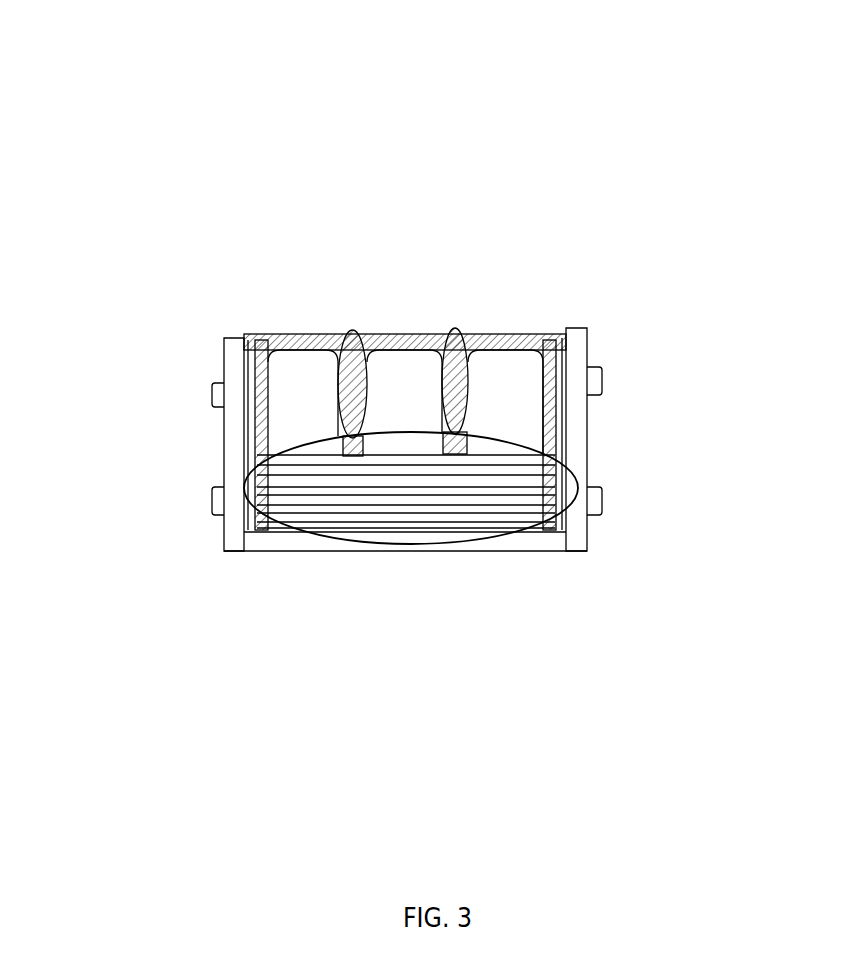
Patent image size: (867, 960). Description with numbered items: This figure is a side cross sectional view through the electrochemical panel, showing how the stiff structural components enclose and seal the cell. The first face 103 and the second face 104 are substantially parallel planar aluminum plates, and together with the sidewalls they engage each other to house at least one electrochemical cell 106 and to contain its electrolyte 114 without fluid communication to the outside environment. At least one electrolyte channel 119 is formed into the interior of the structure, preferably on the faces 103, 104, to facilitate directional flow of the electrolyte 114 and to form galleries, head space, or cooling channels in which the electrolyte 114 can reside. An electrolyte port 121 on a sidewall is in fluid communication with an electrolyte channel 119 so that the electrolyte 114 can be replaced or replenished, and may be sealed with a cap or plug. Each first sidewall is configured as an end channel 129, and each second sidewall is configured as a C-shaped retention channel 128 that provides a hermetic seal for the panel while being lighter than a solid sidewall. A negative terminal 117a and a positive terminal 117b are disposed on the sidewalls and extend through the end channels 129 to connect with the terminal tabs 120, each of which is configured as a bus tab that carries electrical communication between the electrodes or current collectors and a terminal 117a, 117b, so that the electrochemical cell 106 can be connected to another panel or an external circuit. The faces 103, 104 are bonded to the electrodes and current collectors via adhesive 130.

The first face 103 is at (405, 179).
The second face 104 is at (385, 327).
The electrochemical cell 106 is at (508, 537).
The electrolyte 114 is at (261, 395).
The negative terminal 117a is at (213, 393).
The positive terminal 117b is at (602, 375).
The electrolyte channel 119 is at (353, 330).
The terminal tab 120 is at (249, 388).
The electrolyte port 121 is at (212, 508).
The retention channel 128 is at (277, 540).
The end channel 129 is at (230, 455).
The adhesive 130 is at (288, 377).